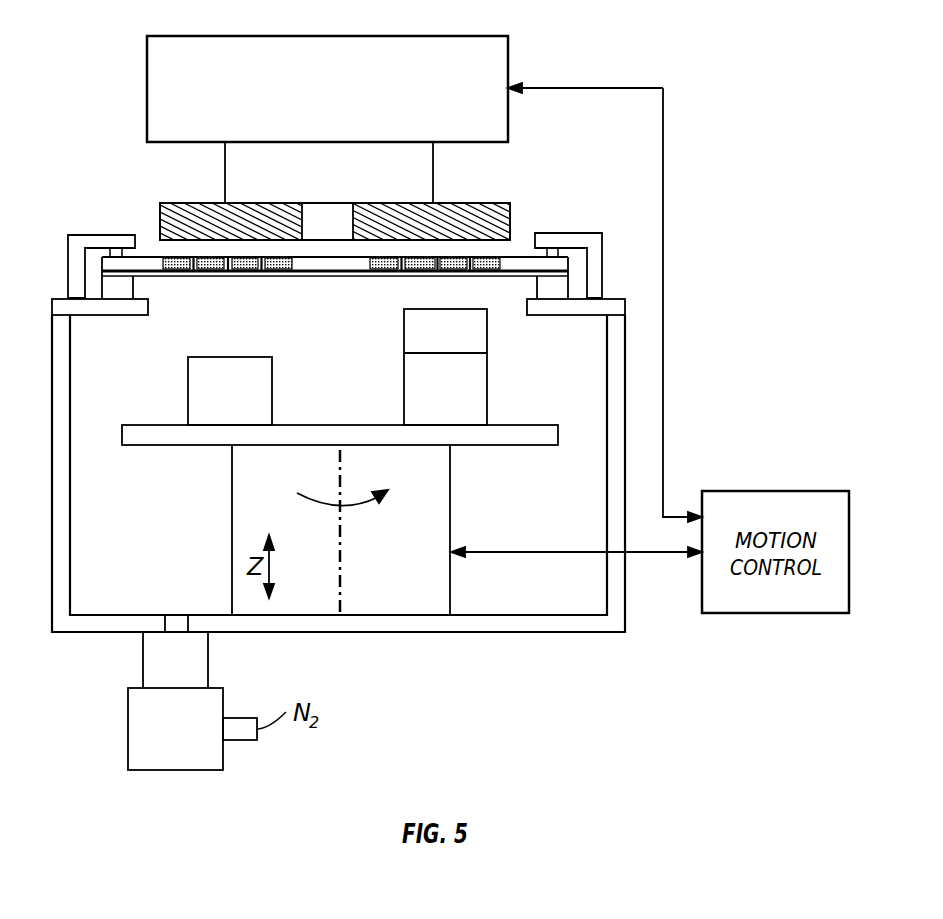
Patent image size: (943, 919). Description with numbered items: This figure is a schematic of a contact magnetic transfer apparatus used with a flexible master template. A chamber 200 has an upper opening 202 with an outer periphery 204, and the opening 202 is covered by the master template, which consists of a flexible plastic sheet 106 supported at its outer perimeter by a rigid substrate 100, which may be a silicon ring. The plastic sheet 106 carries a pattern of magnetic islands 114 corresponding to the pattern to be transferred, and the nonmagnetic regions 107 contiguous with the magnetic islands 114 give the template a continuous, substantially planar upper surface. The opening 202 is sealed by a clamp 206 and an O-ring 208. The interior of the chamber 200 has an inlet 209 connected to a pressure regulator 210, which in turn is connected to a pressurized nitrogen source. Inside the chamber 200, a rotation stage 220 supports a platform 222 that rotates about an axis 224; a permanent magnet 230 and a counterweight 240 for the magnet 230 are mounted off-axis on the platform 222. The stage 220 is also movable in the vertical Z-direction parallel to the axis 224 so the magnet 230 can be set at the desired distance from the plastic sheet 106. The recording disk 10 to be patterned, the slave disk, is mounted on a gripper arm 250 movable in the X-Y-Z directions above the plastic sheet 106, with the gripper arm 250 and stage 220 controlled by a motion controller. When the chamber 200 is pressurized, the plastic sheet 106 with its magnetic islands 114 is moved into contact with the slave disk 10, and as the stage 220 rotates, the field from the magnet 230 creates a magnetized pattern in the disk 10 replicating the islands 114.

The gripper arm 250 is at (487, 36).
The recording disk 10 is at (477, 203).
The nonmagnetic regions 107 is at (312, 260).
The flexible plastic sheet 106 is at (307, 273).
The magnetic islands 114 is at (175, 273).
The rigid substrate 100 is at (100, 288).
The clamp 206 is at (80, 235).
The upper opening 202 is at (513, 293).
The O-ring 208 is at (117, 250).
The outer periphery 204 is at (148, 303).
The chamber 200 is at (77, 634).
The platform 222 is at (140, 425).
The rotation stage 220 is at (242, 503).
The axis 224 is at (342, 585).
The counterweight 240 is at (249, 357).
The permanent magnet 230 is at (477, 390).
The inlet 209 is at (172, 615).
The pressure regulator 210 is at (143, 770).